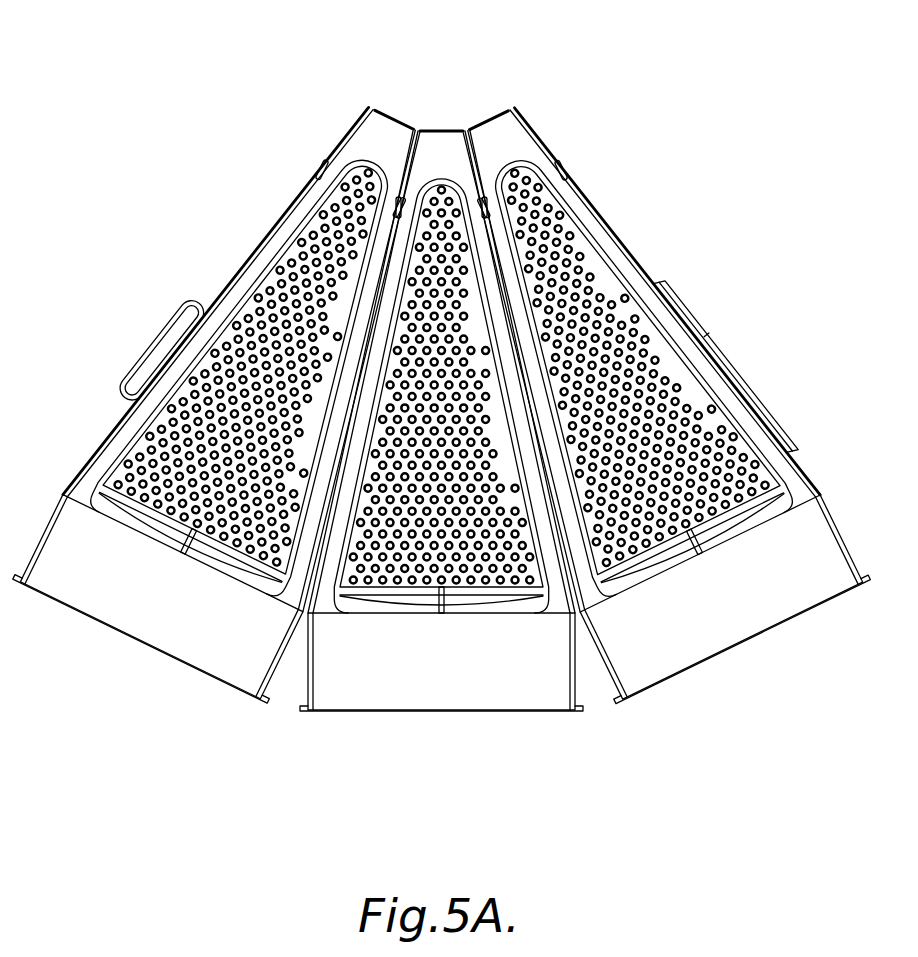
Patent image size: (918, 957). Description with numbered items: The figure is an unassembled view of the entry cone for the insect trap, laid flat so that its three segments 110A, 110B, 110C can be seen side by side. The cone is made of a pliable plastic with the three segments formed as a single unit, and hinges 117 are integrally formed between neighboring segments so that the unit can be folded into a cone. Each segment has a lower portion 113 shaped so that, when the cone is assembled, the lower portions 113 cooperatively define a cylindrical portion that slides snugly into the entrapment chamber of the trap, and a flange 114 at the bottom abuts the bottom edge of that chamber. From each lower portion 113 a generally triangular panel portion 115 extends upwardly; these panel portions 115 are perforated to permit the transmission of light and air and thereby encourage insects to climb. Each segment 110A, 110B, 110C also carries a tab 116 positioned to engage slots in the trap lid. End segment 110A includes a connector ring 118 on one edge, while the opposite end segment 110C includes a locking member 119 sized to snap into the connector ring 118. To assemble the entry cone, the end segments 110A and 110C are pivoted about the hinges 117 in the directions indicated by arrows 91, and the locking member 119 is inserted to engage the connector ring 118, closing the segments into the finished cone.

The arrows 91 is at (441, 301).
The end segment 110A is at (249, 317).
The segment 110B is at (441, 323).
The end segment 110C is at (594, 337).
The lower portion 113 is at (441, 628).
The flange 114 is at (442, 667).
The panel portion 115 is at (424, 439).
The tab 116 is at (444, 621).
The hinge 117 is at (347, 370).
The connector ring 118 is at (153, 345).
The locking member 119 is at (725, 367).